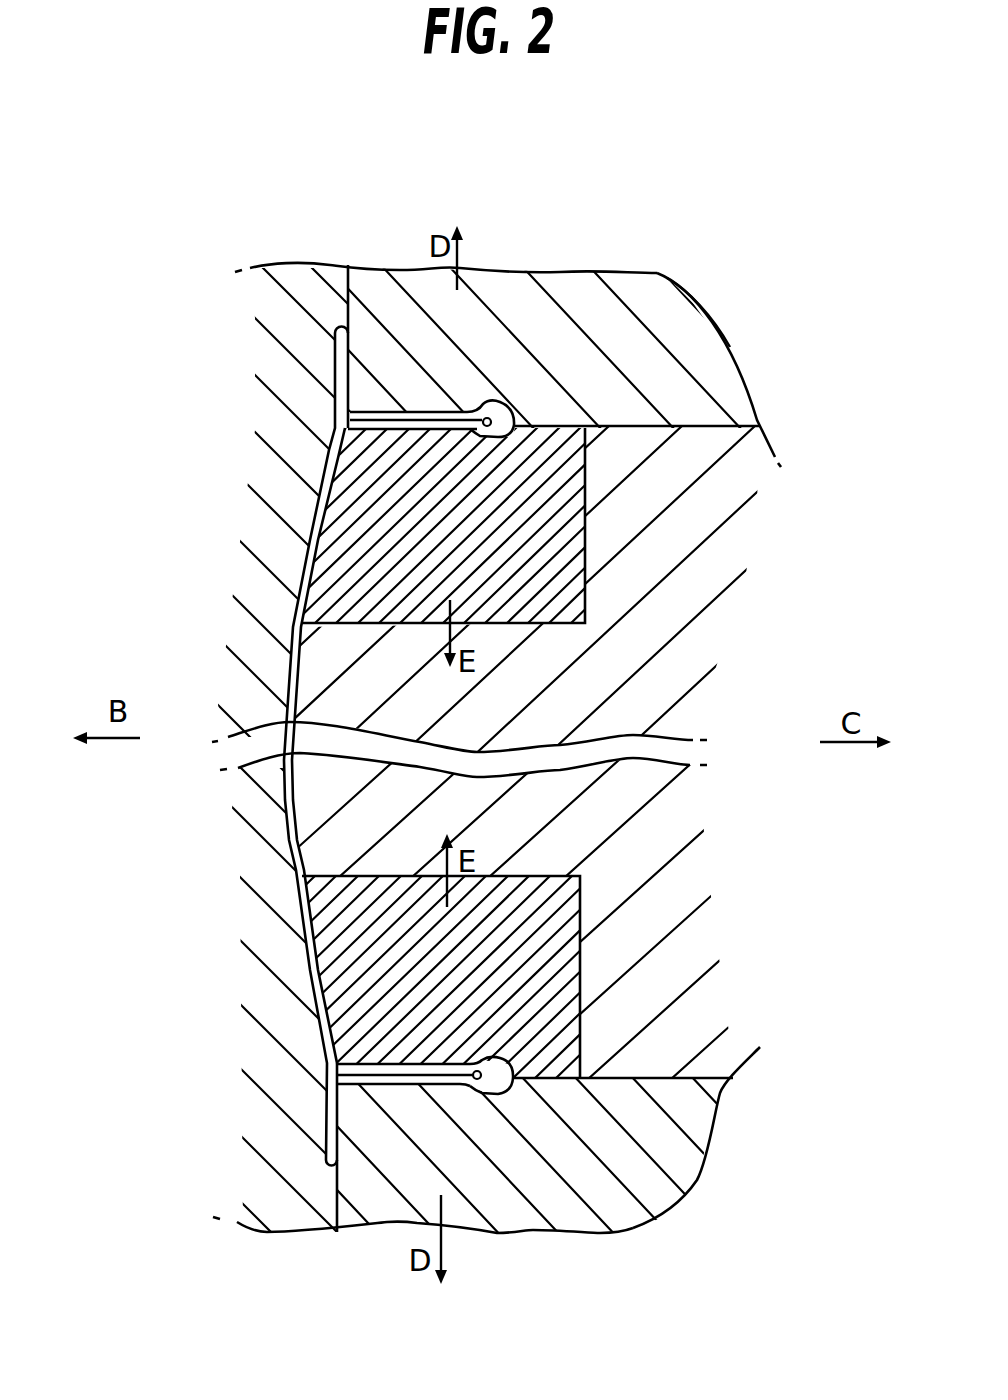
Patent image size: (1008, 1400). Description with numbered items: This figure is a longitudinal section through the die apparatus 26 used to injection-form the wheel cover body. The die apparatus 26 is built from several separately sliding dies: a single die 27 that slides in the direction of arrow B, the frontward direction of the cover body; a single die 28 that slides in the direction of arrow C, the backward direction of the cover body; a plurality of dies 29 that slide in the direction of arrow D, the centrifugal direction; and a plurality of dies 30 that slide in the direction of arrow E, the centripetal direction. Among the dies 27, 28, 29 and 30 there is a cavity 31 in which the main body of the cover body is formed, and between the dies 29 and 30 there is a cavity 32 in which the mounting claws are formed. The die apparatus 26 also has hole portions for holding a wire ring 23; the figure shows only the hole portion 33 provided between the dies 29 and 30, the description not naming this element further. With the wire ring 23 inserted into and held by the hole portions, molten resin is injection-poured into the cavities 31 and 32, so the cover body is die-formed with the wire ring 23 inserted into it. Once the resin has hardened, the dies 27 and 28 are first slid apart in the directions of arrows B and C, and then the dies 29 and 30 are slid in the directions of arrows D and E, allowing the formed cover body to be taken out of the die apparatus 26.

The wire ring 23 is at (517, 413).
The die apparatus 26 is at (264, 240).
The single die 27 is at (265, 535).
The single die 28 is at (700, 652).
The dies 29 is at (643, 287).
The dies 30 is at (573, 569).
The cavity 31 is at (333, 450).
The cavity 32 is at (482, 406).
The projection 33 is at (493, 407).